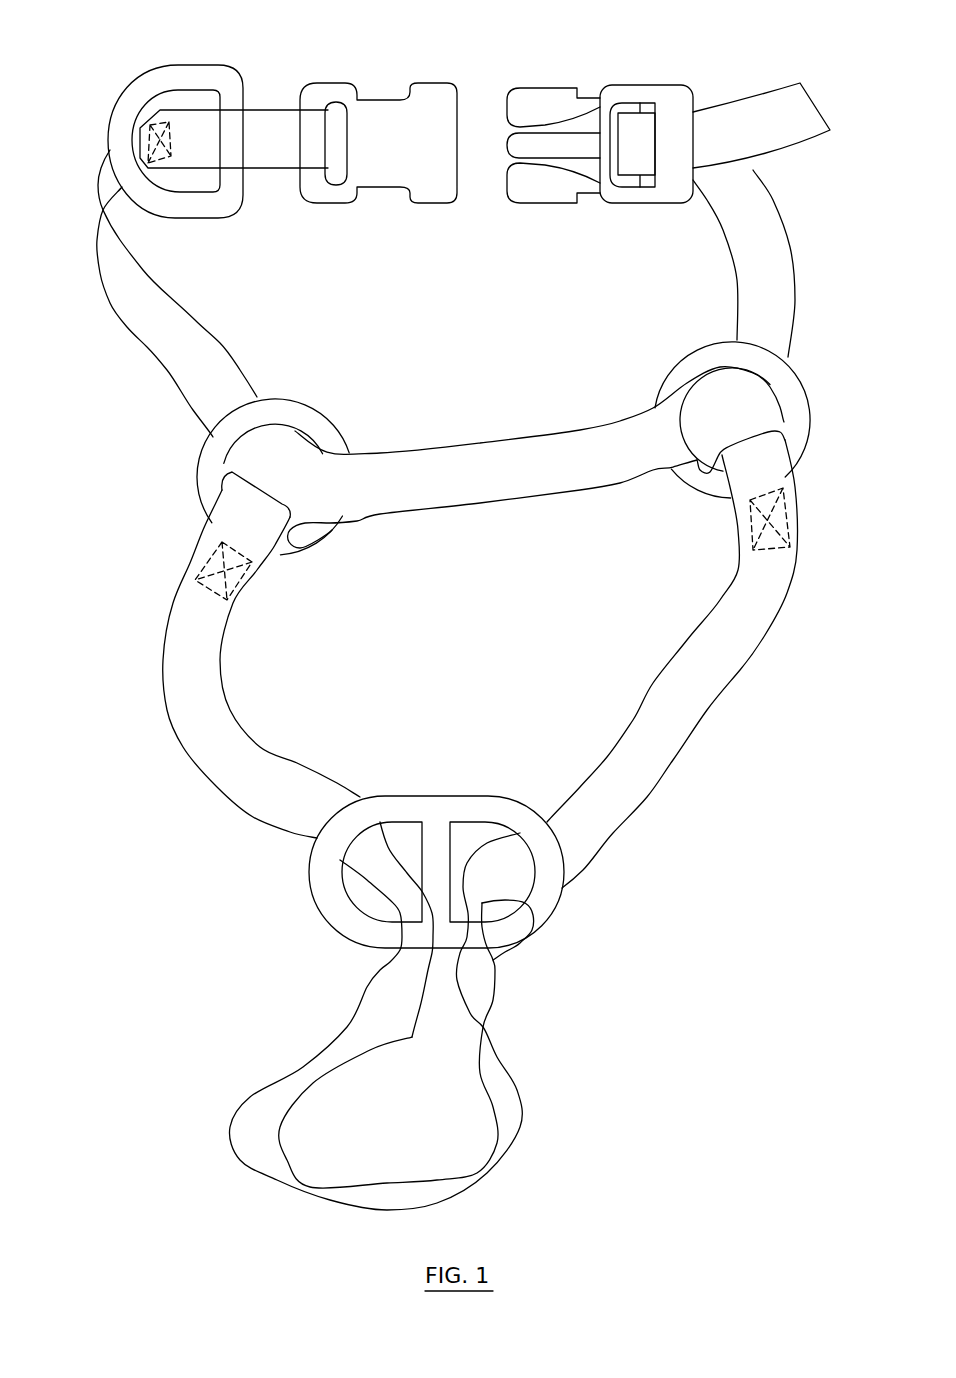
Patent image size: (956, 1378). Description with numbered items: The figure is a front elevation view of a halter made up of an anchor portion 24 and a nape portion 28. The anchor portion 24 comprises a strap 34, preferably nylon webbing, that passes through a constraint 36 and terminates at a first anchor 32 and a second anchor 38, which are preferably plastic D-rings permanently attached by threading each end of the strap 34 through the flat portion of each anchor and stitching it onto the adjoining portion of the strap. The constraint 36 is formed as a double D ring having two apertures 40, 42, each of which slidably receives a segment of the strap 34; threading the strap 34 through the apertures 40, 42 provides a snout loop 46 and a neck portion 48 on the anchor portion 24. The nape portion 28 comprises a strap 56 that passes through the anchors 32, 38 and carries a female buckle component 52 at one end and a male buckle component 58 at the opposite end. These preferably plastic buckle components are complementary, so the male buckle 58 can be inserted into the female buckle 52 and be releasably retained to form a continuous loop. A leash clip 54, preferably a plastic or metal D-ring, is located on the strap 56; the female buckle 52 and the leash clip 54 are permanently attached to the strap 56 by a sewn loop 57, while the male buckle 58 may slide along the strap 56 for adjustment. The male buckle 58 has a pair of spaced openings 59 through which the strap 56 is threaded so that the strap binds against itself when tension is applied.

The anchor portion 24 is at (235, 677).
The nape portion 28 is at (162, 303).
The first anchor 32 is at (337, 542).
The strap 34 is at (258, 820).
The constraint 36 is at (444, 784).
The second anchor 38 is at (698, 493).
The aperture 40 is at (363, 915).
The aperture 42 is at (524, 925).
The snout loop 46 is at (404, 1139).
The neck portion 48 is at (456, 697).
The female buckle component 52 is at (408, 88).
The leash clip 54 is at (221, 66).
The strap 56 is at (186, 397).
The sewn loop 57 is at (277, 150).
The male buckle component 58 is at (666, 84).
The spaced openings 59 is at (627, 190).